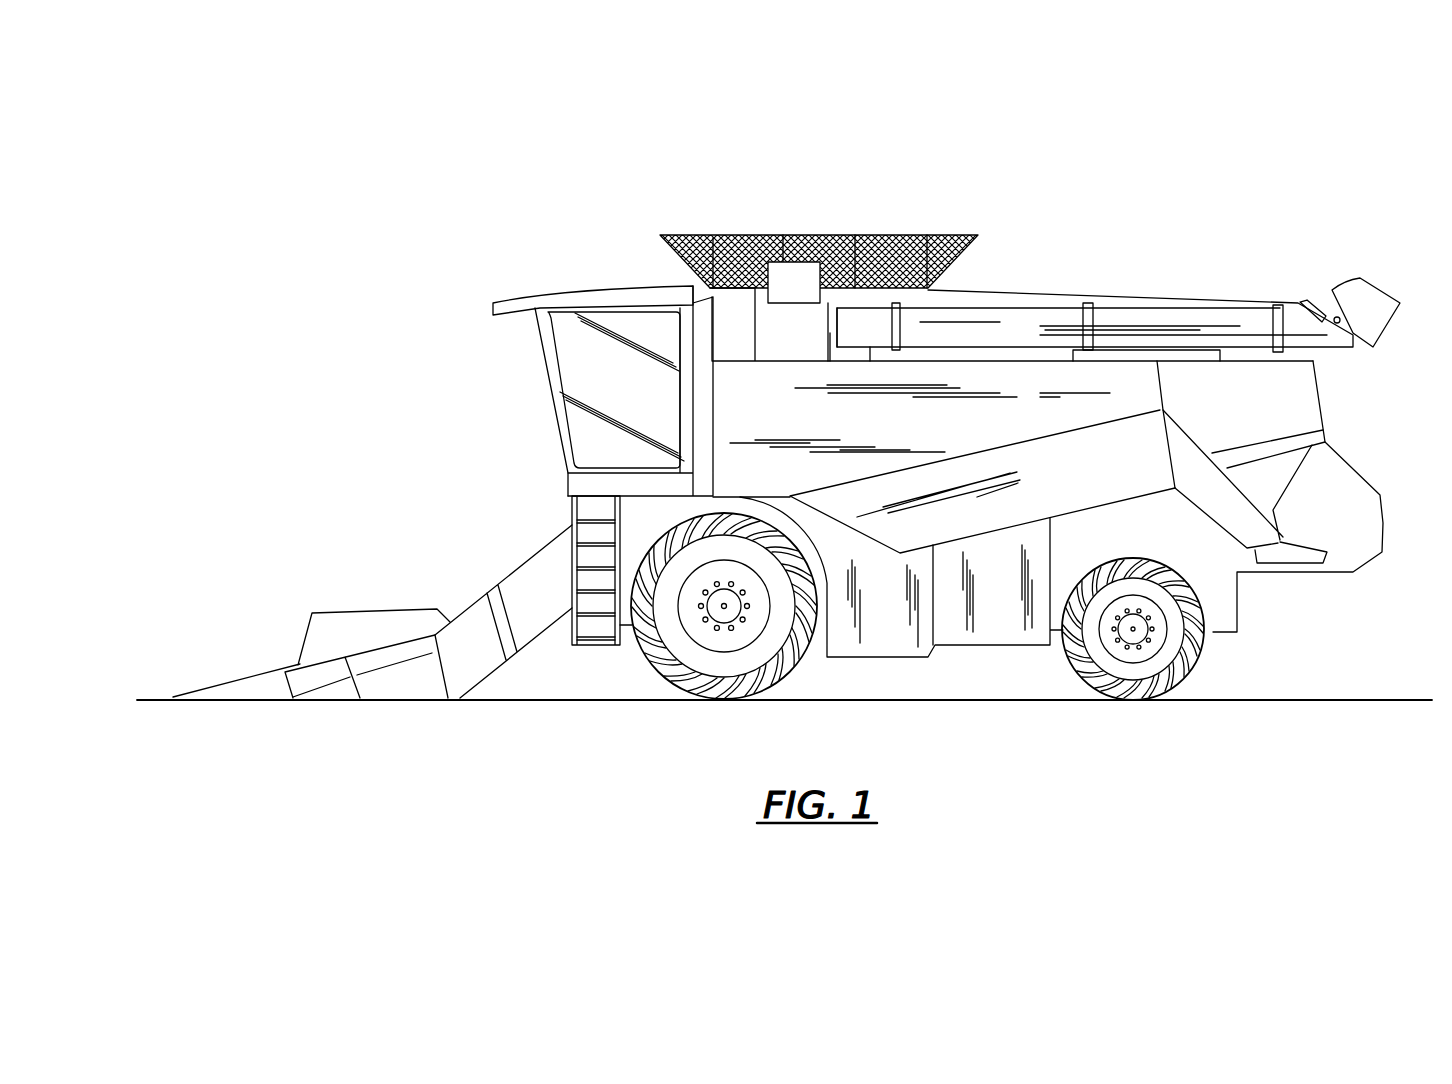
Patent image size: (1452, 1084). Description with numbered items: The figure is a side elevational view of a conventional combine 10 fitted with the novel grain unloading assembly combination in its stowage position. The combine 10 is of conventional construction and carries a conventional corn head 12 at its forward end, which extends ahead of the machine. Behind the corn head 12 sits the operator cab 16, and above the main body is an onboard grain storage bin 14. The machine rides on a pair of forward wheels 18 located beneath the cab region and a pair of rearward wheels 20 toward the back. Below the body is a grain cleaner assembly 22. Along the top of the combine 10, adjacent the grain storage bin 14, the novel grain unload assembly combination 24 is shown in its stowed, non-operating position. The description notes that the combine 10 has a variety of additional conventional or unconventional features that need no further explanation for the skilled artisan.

The combine 10 is at (1170, 193).
The corn head 12 is at (313, 628).
The onboard grain storage bin 14 is at (1112, 383).
The operator cab 16 is at (547, 373).
The forward wheels 18 is at (665, 663).
The rearward wheels 20 is at (1183, 667).
The grain cleaner assembly 22 is at (933, 665).
The grain unload assembly combination 24 is at (1238, 267).